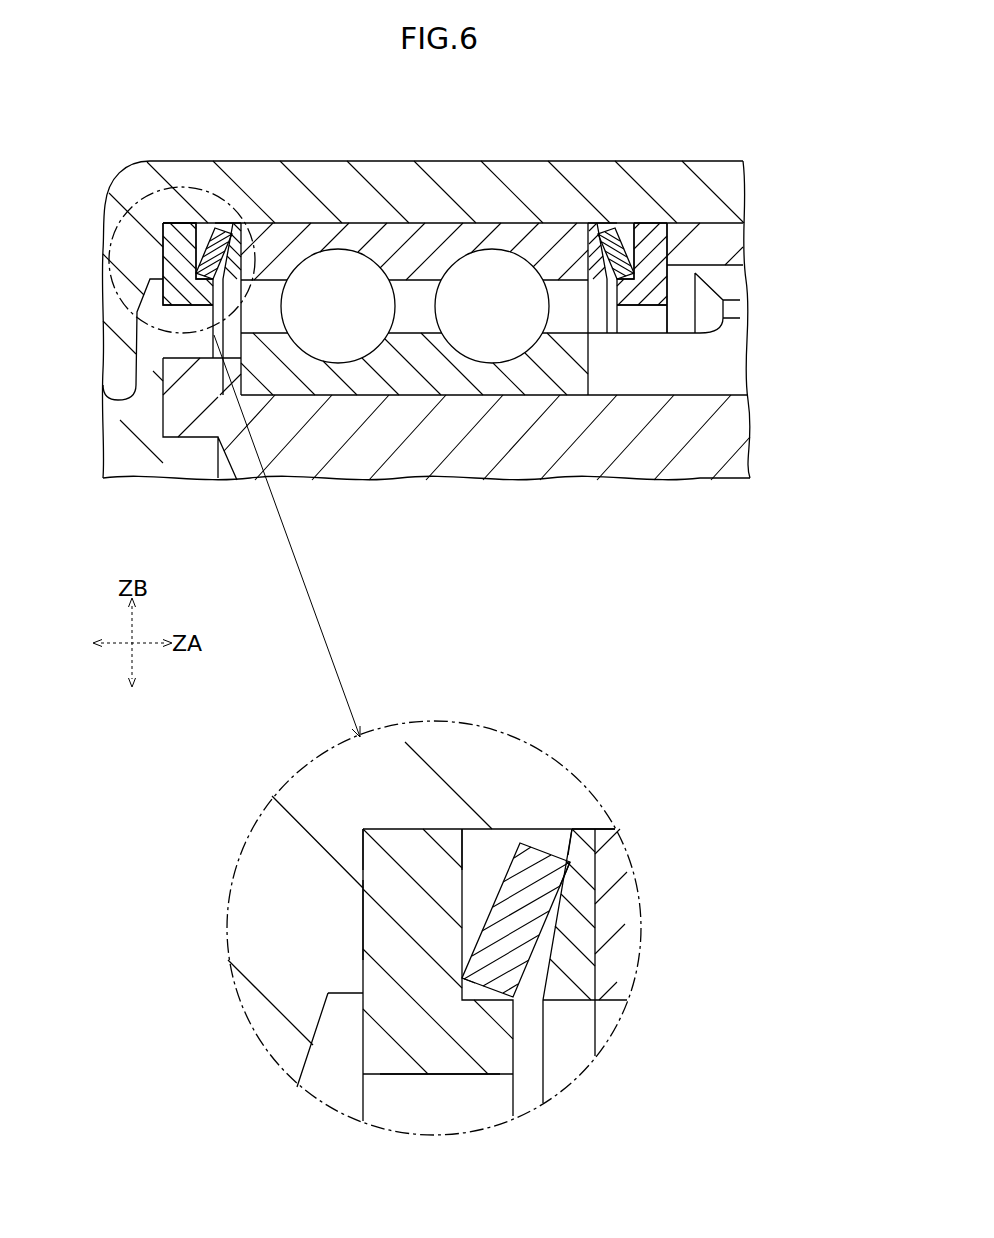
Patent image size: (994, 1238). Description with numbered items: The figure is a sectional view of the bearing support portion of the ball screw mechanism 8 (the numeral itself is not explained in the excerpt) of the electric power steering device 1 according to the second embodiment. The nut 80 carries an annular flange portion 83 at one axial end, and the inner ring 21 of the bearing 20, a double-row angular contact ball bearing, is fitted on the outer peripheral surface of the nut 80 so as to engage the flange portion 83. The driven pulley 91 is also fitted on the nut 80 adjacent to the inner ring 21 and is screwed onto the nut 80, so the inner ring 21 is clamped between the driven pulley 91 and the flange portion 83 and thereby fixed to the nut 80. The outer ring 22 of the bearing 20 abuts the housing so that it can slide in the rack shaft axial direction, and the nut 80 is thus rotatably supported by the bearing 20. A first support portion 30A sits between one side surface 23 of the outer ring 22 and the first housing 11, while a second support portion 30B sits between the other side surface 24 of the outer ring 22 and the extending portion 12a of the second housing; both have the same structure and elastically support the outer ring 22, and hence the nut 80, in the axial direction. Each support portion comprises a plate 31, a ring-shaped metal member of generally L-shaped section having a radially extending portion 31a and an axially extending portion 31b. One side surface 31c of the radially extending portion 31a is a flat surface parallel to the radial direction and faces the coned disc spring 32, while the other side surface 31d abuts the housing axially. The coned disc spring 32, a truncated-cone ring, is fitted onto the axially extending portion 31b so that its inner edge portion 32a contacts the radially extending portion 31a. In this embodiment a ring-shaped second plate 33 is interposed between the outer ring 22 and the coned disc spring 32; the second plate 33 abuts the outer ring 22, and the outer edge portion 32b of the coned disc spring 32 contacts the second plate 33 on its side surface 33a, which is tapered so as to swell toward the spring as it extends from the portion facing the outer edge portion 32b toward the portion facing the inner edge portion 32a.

The electric power steering device 1 is at (93, 168).
The rotating member 8 is at (153, 376).
The nut 80 is at (160, 420).
The flange portion 83 is at (165, 340).
The first housing 11 is at (700, 220).
The extending portion 12a is at (735, 243).
The bearing 20 is at (381, 212).
The inner ring 21 is at (410, 362).
The outer ring 22 is at (445, 238).
The one side surface 23 is at (233, 234).
The other side surface 24 is at (592, 232).
The first support portion 30A is at (171, 212).
The second support portion 30B is at (651, 213).
The plate 31 is at (163, 258).
The radially extending portion 31a is at (375, 912).
The axially extending portion 31b is at (487, 1074).
The one side surface 31c is at (462, 845).
The other side surface 31d is at (363, 856).
The coned disc spring 32 is at (208, 227).
The inner edge portion 32a is at (462, 978).
The outer edge portion 32b is at (600, 916).
The second plate 33 is at (247, 237).
The side surface 33a is at (565, 850).
The driven pulley 91 is at (740, 352).